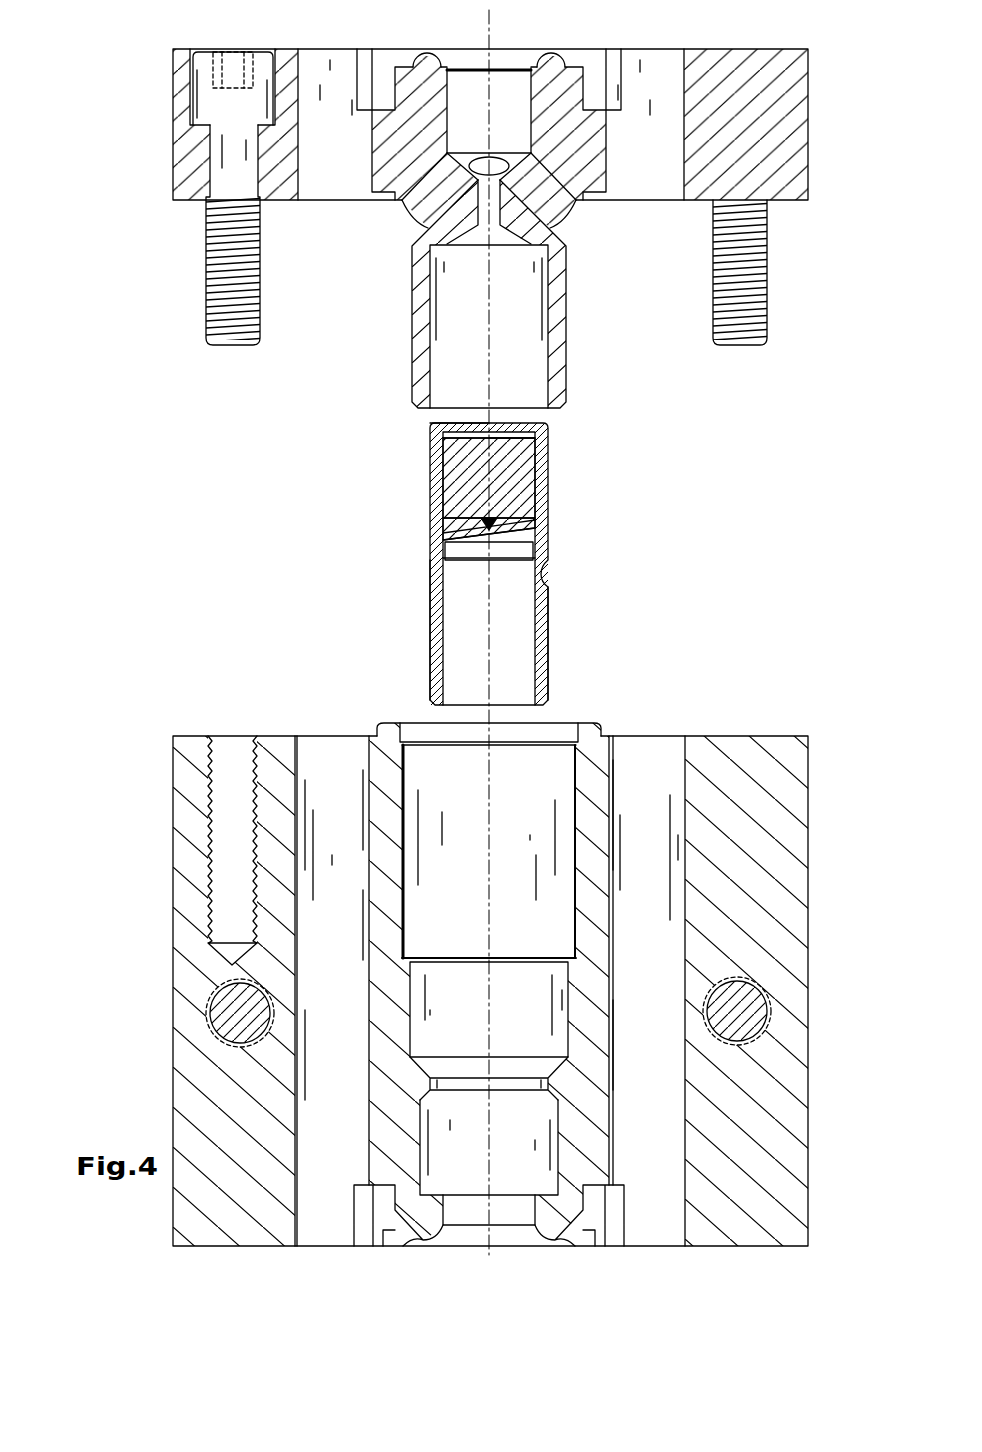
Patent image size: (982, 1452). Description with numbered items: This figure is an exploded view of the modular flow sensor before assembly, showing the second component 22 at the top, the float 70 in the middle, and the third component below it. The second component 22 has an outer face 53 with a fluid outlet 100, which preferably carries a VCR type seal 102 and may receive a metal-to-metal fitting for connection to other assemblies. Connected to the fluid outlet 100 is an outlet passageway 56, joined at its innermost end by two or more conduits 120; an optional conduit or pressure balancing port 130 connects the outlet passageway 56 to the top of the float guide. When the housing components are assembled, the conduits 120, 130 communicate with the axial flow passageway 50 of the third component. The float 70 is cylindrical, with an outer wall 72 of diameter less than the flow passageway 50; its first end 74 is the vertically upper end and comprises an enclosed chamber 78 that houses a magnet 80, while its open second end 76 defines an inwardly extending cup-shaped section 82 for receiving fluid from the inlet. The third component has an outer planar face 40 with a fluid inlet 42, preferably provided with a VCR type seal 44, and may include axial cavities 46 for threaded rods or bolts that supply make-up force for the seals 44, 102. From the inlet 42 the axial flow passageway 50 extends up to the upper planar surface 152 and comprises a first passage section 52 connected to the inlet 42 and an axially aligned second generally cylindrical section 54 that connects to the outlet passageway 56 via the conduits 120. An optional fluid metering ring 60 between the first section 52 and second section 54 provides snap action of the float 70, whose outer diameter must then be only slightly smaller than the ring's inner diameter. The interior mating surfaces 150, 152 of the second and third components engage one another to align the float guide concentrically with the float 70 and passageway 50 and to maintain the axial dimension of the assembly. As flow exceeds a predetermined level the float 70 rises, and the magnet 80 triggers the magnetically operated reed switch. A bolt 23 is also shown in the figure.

The second component 22 is at (170, 125).
The socket head cap screw 23 is at (232, 66).
The outer face 53 is at (728, 48).
The fluid outlet 100 is at (482, 40).
The VCR type seal 102 is at (425, 50).
The outlet passageway 56 is at (522, 124).
The conduits 120 is at (447, 182).
The pressure balancing port 130 is at (489, 212).
The interior mating surface 150 is at (792, 202).
The float 70 is at (492, 528).
The first end 74 is at (473, 421).
The enclosed chamber 78 is at (510, 430).
The magnet 80 is at (455, 498).
The cup-shaped section 82 is at (504, 652).
The outer wall 72 is at (430, 663).
The second end 76 is at (546, 665).
The upper planar surface 152 is at (747, 735).
The outer planar face 40 is at (331, 1247).
The axial cavities 46 is at (316, 1014).
The axial flow passageway 50 is at (616, 1013).
The second generally cylindrical section 54 is at (505, 812).
The first passage section 52 is at (496, 1137).
The fluid metering ring 60 is at (547, 1145).
The fluid inlet 42 is at (476, 1251).
The VCR type seal 44 is at (551, 1247).